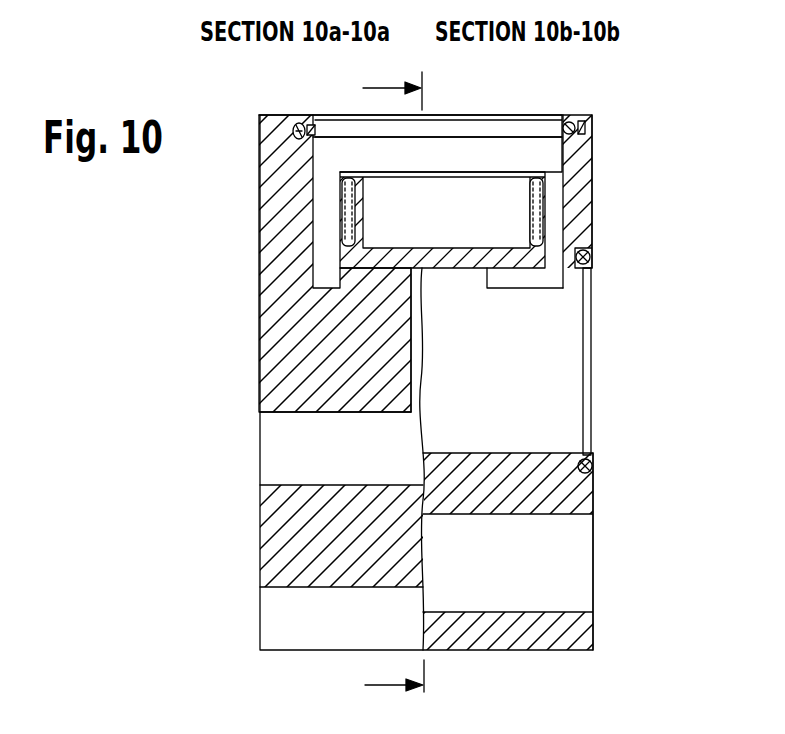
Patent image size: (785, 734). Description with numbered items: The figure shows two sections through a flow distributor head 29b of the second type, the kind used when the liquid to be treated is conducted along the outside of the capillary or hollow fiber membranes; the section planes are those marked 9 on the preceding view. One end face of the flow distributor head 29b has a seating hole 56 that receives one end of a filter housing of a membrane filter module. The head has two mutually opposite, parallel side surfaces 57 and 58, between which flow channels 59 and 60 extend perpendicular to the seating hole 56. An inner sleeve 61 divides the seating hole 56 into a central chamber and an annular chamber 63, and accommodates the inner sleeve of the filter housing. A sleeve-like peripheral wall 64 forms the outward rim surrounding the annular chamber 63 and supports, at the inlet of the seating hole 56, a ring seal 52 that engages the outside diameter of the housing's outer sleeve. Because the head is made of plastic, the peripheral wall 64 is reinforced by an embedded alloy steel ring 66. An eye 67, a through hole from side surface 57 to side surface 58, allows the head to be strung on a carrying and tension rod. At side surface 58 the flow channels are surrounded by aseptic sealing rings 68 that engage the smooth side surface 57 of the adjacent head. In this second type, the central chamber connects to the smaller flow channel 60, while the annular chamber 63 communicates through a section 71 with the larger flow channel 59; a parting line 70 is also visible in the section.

The flow distributor head 29b is at (600, 104).
The ring seal 52 is at (457, 133).
The seating hole 56 is at (512, 158).
The side surface 57 is at (262, 305).
The side surface 58 is at (590, 240).
The flow channel 59 is at (563, 387).
The flow channel 60 is at (262, 456).
The inner sleeve 61 is at (547, 190).
The annular chamber 63 is at (553, 240).
The peripheral wall 64 is at (573, 153).
The alloy steel ring 66 is at (300, 130).
The eye 67 is at (558, 575).
The aseptic sealing ring 68 is at (598, 468).
The parting line 70 is at (410, 360).
The section 71 is at (517, 278).
The section line 9- 9 is at (393, 374).